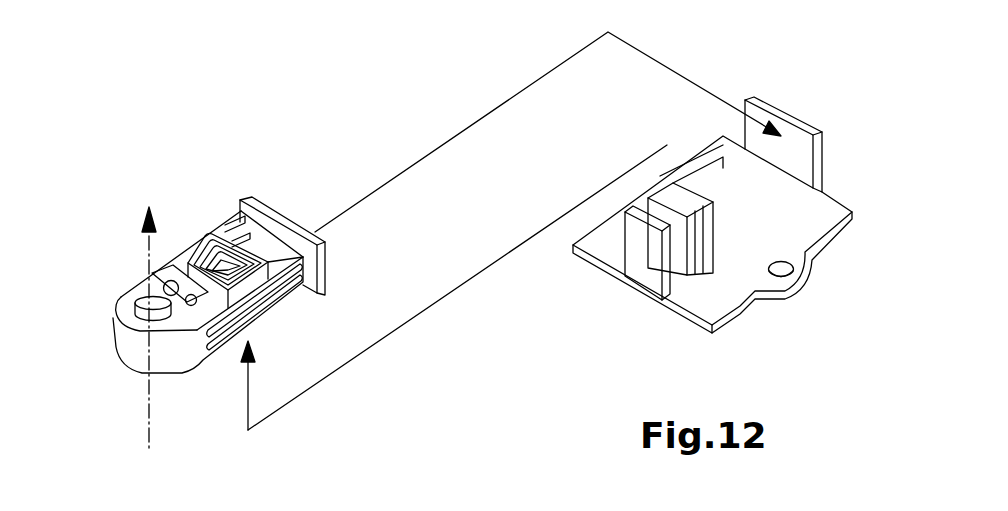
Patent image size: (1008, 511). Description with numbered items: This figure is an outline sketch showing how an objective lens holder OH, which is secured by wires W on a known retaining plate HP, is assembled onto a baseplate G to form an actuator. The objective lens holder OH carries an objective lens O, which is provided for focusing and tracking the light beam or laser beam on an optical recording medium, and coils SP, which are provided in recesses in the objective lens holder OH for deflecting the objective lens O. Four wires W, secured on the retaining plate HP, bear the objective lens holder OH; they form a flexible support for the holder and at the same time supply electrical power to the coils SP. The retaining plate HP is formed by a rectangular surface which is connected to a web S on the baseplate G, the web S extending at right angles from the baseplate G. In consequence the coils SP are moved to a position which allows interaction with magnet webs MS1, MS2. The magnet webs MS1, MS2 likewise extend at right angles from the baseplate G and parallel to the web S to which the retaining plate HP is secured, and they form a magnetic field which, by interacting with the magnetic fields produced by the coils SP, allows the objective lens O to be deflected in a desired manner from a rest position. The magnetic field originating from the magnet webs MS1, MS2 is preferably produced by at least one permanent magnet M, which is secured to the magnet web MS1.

The objective lens holder OH is at (177, 360).
The objective lens O is at (128, 300).
The coils SP is at (172, 283).
The retaining plate HP is at (278, 205).
The wires W is at (290, 284).
The baseplate G is at (822, 212).
The web S is at (790, 108).
The permanent magnet M is at (667, 202).
The magnet web MS1 is at (720, 182).
The magnet web MS2 is at (637, 231).